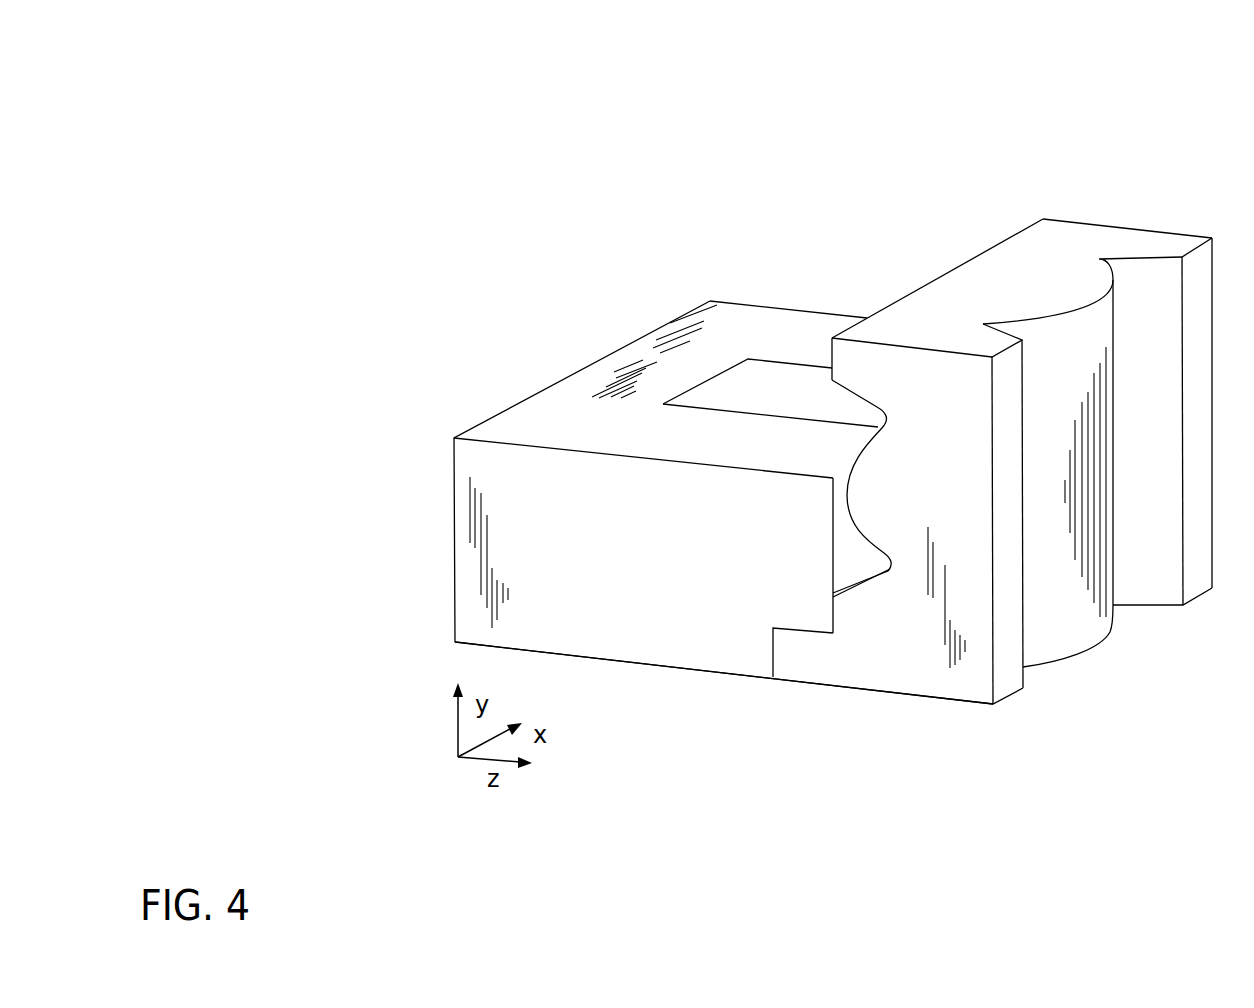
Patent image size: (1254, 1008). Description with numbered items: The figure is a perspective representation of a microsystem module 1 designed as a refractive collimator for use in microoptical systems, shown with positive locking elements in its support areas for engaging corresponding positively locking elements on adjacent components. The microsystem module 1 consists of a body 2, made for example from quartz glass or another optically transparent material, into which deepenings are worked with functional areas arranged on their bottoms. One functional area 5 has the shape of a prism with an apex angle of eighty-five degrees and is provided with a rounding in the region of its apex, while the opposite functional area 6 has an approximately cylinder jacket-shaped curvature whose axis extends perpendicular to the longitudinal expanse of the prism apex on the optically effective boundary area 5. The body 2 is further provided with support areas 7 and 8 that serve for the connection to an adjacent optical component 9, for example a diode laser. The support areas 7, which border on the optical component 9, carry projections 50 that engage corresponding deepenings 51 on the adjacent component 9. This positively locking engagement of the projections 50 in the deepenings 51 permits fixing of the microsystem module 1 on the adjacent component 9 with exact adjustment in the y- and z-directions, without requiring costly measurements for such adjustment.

The microsystem module 1 is at (995, 200).
The body 2 is at (977, 303).
The functional area 5 is at (867, 500).
The functional area 6 is at (1088, 611).
The support area 7 is at (847, 358).
The support area 8 is at (1197, 259).
The adjacent optical component 9 is at (575, 406).
The projection 50 is at (797, 660).
The deepening 51 is at (773, 643).